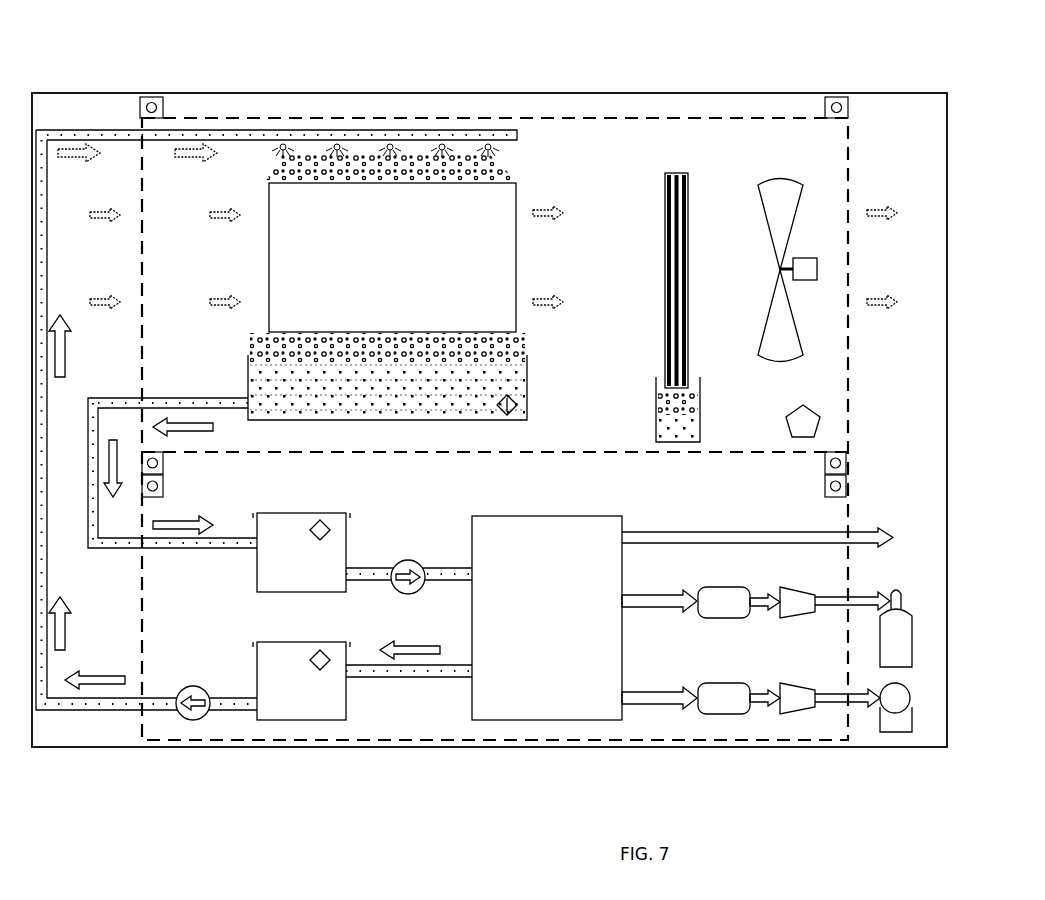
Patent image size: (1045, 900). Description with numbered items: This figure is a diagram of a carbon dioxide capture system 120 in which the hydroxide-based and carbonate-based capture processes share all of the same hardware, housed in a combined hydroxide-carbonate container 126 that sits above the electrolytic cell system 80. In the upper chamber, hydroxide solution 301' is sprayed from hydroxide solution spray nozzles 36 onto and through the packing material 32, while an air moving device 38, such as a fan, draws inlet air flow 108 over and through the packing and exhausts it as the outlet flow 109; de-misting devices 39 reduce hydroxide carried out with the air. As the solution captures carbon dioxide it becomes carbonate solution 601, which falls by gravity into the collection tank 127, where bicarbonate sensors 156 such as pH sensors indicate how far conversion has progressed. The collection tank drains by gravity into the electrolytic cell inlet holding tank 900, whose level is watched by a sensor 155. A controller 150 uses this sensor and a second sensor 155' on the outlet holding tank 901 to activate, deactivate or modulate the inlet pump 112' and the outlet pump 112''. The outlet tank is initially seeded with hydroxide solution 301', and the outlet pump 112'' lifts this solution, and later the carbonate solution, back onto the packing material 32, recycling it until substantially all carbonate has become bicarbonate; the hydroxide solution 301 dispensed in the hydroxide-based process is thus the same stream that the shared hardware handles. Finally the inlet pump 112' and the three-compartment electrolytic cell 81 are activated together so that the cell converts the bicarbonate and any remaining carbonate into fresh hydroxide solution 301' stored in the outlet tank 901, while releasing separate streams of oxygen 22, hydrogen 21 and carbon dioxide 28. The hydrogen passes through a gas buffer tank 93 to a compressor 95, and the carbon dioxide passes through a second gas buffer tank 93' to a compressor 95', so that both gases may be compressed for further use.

The carbon dioxide capture system 120 is at (362, 95).
The electrolytic cell system 80 is at (175, 622).
The carbonate solution 601 is at (130, 400).
The hydroxide solution 301' is at (276, 101).
The hydroxide solution spray nozzles 36 is at (284, 143).
The packing material 32 is at (503, 225).
The collection tank 127 is at (527, 362).
The bicarbonate sensors 156 is at (515, 398).
The inlet air flow 108 is at (98, 214).
The air outlet flow 109 is at (878, 212).
The de-misting devices 39 is at (677, 175).
The air moving device 38 is at (780, 188).
The combined hydroxide-carbonate container 126 is at (825, 378).
The controller 150 is at (812, 418).
The electrolytic cell inlet holding tank 900 is at (282, 520).
The sensor 155 is at (349, 500).
The inlet pump 112' is at (409, 554).
The sensor 155' is at (356, 638).
The outlet holding tank 901 is at (278, 702).
The hydroxide solution 301 is at (384, 720).
The outlet pump 112'' is at (207, 685).
The three-compartment electrolytic cell 81 is at (546, 695).
The oxygen 22 is at (672, 538).
The hydrogen 21 is at (648, 602).
The gas buffer tank 93 is at (739, 586).
The compressor 95 is at (846, 611).
The carbon dioxide 28 is at (660, 690).
The gas buffer tank 93' is at (739, 679).
The compressor 95' is at (846, 688).